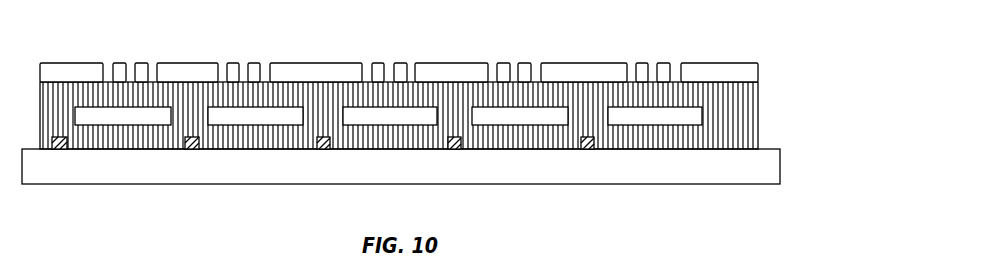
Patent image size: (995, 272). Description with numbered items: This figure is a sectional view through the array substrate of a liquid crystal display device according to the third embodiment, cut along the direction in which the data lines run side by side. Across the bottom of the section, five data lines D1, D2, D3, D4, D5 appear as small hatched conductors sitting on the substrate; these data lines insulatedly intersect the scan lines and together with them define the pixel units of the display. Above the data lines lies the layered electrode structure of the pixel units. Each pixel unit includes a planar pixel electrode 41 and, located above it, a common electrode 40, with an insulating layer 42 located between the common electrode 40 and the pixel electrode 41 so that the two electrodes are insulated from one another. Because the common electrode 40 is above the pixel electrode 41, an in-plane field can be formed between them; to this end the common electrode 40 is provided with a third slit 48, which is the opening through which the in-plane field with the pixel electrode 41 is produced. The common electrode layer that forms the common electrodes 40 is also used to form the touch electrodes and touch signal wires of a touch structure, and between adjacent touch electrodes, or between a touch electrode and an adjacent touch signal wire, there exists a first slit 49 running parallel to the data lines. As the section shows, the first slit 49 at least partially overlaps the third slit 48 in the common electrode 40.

The common electrode 40 is at (705, 71).
The pixel electrode 41 is at (703, 115).
The insulating layer 42 is at (753, 84).
The third slit 48 is at (675, 72).
The first slit 49 is at (655, 72).
The data line D1 is at (66, 150).
The data line D2 is at (198, 150).
The data line D3 is at (328, 150).
The data line D4 is at (459, 150).
The data line D5 is at (591, 150).